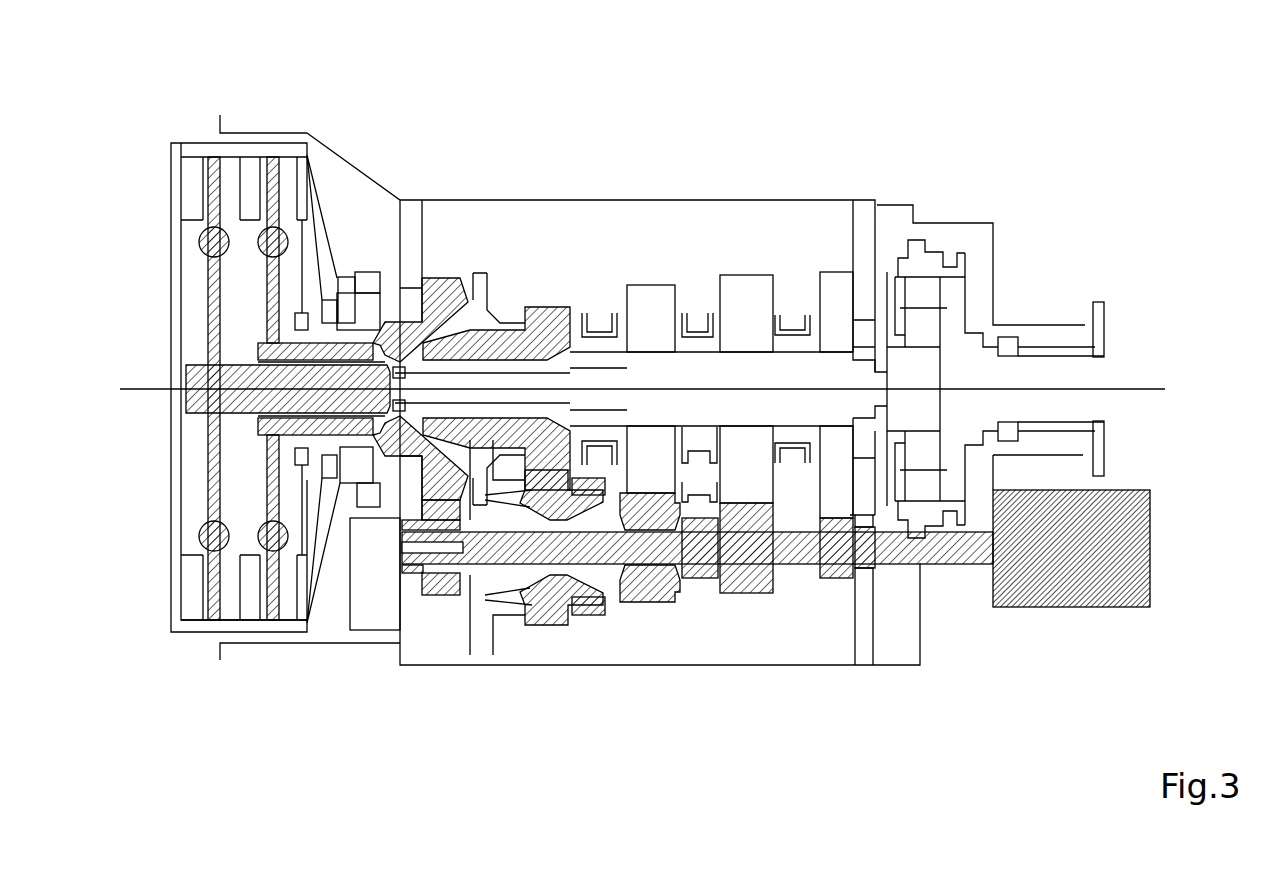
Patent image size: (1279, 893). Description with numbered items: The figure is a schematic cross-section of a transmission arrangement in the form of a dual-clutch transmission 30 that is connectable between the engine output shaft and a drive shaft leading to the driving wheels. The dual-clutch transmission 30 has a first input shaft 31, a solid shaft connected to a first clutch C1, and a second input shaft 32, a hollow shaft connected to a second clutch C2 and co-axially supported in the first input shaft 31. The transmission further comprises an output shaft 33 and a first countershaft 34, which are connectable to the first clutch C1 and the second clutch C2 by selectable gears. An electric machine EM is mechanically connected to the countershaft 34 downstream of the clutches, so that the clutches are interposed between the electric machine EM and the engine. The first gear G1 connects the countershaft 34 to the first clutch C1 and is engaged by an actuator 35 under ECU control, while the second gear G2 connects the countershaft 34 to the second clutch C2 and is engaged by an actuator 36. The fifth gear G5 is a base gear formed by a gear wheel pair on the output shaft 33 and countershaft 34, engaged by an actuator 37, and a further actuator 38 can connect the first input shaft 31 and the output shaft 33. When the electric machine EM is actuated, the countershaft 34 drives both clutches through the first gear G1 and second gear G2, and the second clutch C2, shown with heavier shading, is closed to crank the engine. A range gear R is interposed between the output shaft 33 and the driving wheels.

The dual-clutch transmission 30 is at (784, 152).
The first input shaft 31 is at (185, 372).
The second input shaft 32 is at (398, 322).
The output shaft 33 is at (712, 385).
The first countershaft 34 is at (641, 530).
The actuator 35 is at (592, 600).
The actuator 36 is at (472, 600).
The actuator 37 is at (699, 600).
The further actuator 38 is at (600, 312).
The first clutch C1 is at (211, 155).
The second clutch C2 is at (270, 157).
The first gear G1 is at (535, 638).
The second gear G2 is at (411, 612).
The fifth gear G5 is at (756, 592).
The range gear R is at (941, 244).
The electric machine EM is at (1055, 582).